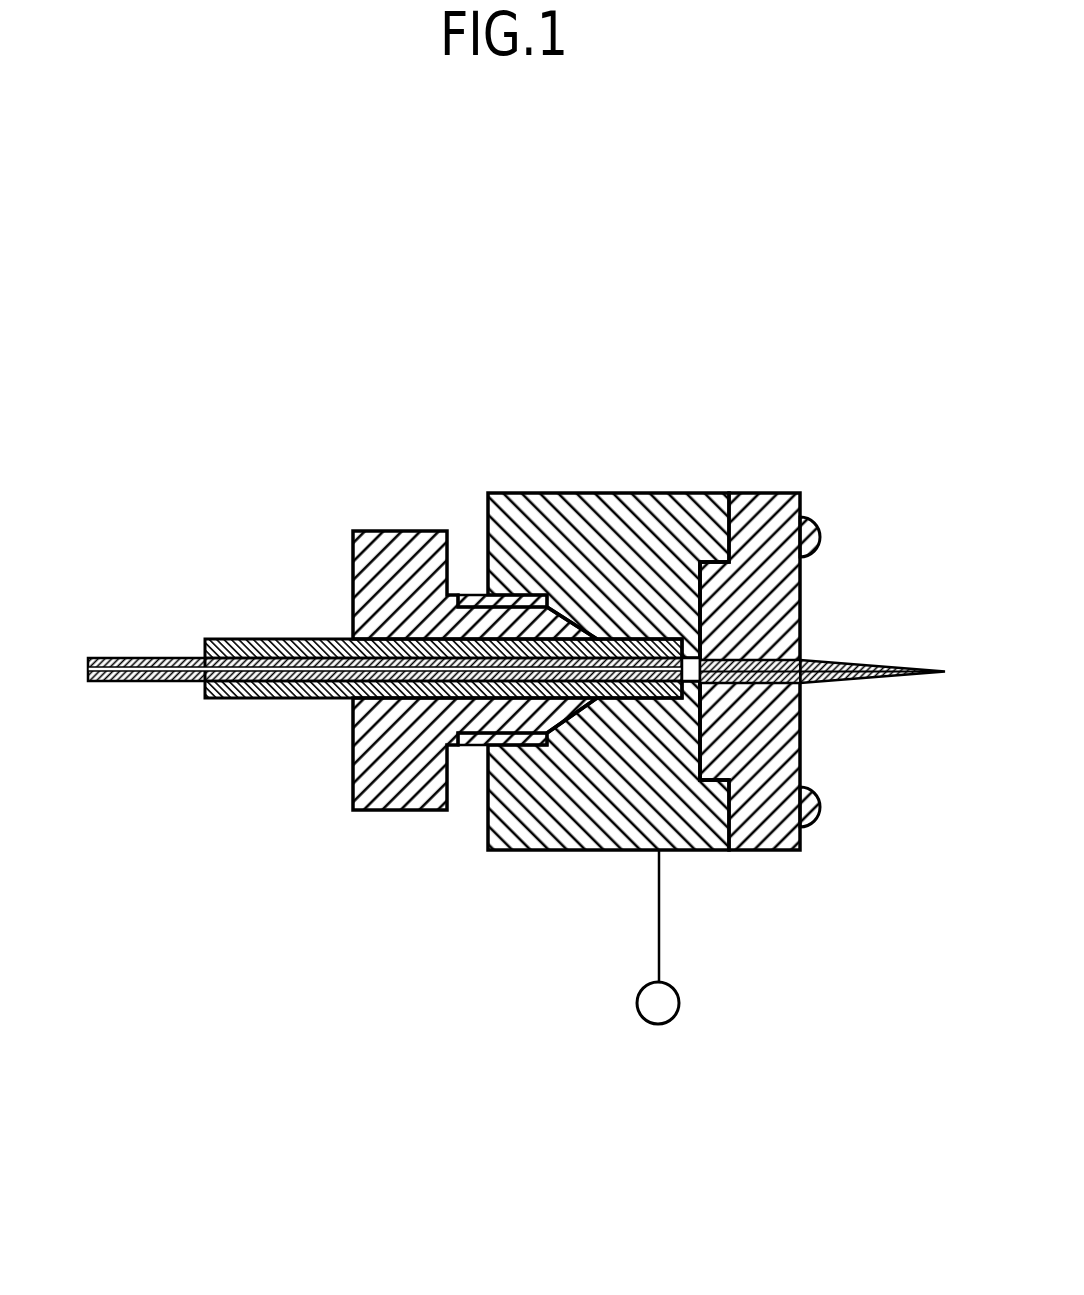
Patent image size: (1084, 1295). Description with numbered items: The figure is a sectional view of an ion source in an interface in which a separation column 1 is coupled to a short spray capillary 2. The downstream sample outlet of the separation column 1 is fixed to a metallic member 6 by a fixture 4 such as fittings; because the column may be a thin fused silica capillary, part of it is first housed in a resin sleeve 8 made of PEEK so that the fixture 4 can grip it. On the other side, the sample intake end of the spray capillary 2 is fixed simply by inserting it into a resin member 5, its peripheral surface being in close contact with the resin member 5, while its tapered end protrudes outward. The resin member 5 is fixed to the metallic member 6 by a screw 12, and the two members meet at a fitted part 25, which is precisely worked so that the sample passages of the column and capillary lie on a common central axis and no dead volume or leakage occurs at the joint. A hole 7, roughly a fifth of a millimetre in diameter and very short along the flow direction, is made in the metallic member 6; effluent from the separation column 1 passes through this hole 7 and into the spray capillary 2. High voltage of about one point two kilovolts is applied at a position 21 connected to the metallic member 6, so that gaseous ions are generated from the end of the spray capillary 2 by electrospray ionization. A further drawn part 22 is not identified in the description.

The separation column 1 is at (128, 652).
The spray capillary 2 is at (856, 683).
The fixture 4 is at (385, 531).
The resin member 5 is at (764, 490).
The metallic member 6 is at (527, 851).
The hole 7 is at (685, 656).
The resin sleeve 8 is at (212, 698).
The screw 12 is at (817, 527).
The position 21 is at (648, 1025).
The through hole 22 is at (703, 645).
The fitted part 25 is at (733, 851).